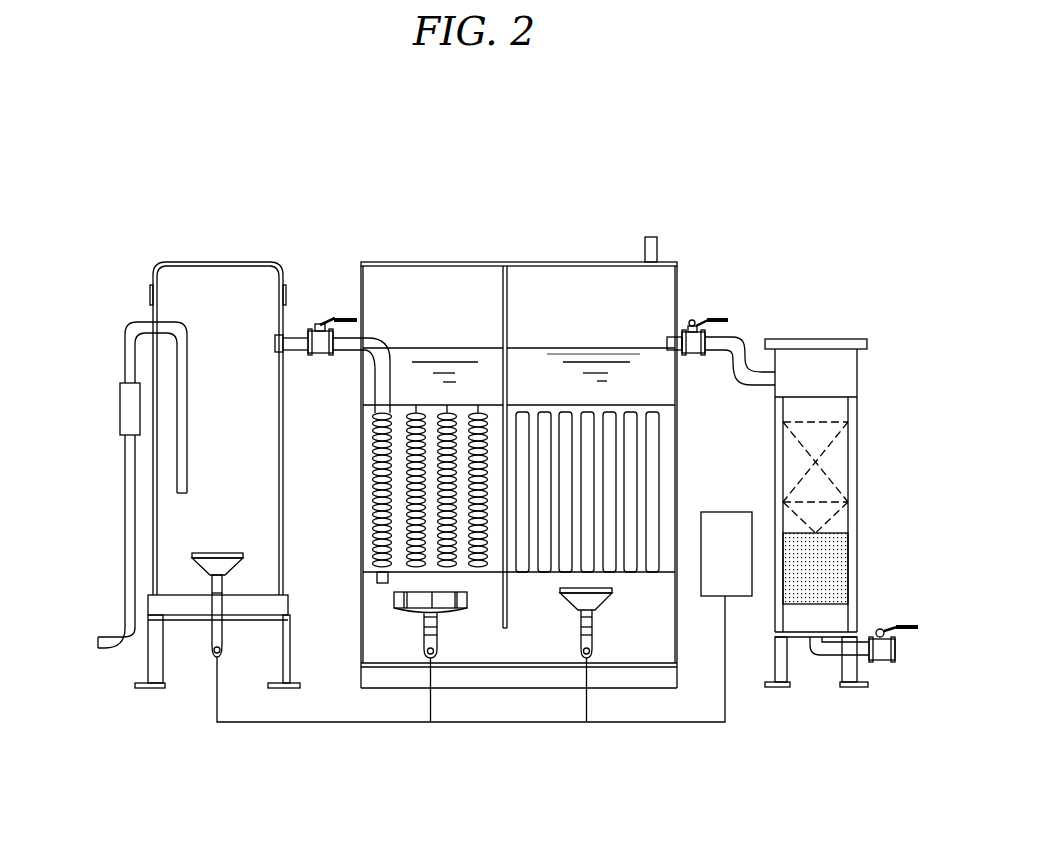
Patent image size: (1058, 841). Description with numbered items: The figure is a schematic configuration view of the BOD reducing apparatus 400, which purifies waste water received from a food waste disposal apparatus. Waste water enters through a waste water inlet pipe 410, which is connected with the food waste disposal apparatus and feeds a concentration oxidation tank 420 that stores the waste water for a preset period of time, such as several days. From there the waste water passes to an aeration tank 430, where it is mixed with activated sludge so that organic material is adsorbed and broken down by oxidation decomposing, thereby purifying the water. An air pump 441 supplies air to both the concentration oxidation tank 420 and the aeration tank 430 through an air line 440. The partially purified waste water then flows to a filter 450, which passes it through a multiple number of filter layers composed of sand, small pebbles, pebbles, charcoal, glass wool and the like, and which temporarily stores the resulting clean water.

The BOD reducing apparatus 400 is at (733, 166).
The waste water inlet pipe 410 is at (125, 497).
The concentration oxidation tank 420 is at (228, 257).
The aeration tank 430 is at (516, 252).
The air line 440 is at (685, 722).
The air pump 441 is at (739, 605).
The filter 450 is at (818, 332).